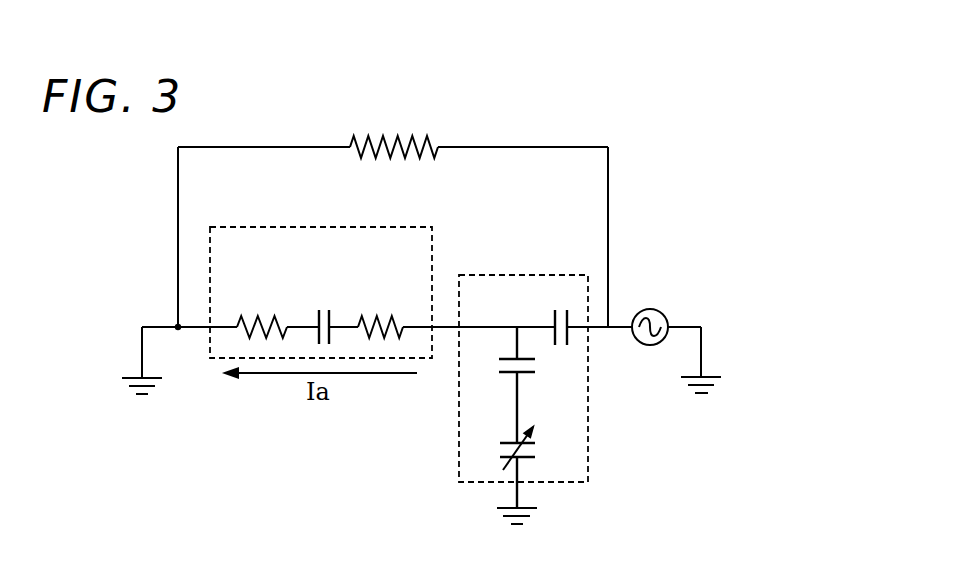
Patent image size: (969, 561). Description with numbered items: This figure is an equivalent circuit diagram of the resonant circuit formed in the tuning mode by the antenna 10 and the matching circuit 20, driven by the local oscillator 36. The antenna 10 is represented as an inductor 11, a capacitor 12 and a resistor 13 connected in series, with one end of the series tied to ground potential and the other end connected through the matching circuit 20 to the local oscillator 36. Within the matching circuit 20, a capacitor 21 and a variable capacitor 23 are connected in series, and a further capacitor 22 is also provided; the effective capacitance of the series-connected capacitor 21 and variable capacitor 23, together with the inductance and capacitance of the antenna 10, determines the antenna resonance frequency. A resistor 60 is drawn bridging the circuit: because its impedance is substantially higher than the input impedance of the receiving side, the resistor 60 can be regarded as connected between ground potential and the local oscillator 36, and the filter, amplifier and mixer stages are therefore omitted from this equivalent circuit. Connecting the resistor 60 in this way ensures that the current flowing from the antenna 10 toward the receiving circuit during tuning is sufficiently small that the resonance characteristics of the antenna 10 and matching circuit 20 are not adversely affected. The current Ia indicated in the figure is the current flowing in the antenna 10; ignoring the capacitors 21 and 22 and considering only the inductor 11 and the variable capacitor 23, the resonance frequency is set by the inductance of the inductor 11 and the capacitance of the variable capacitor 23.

The antenna 10 is at (297, 226).
The inductor 11 is at (262, 312).
The capacitor 12 is at (334, 310).
The resistor 13 is at (383, 312).
The matching circuit 20 is at (566, 483).
The capacitor 21 is at (509, 357).
The capacitor 22 is at (573, 310).
The variable capacitor 23 is at (505, 443).
The local oscillator 36 is at (654, 309).
The resistor 60 is at (413, 135).